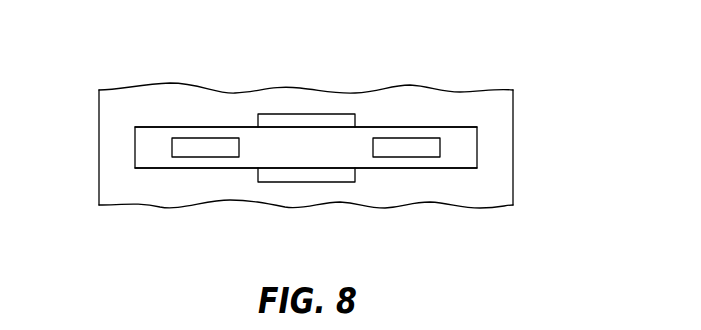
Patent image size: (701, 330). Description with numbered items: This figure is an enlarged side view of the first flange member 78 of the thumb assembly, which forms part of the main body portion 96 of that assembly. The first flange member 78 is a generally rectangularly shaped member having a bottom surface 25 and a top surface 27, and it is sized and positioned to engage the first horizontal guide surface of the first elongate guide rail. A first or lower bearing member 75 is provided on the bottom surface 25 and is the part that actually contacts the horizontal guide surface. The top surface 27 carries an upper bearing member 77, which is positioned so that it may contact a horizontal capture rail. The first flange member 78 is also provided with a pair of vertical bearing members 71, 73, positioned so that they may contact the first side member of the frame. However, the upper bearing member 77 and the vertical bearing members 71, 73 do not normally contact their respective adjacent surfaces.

The main body portion 96 is at (513, 118).
The first flange member 78 is at (135, 147).
The bottom surface 25 is at (213, 168).
The top surface 27 is at (214, 127).
The upper bearing member 77 is at (305, 113).
The lower bearing member 75 is at (307, 182).
The vertical bearing member 71 is at (188, 157).
The vertical bearing member 73 is at (440, 147).